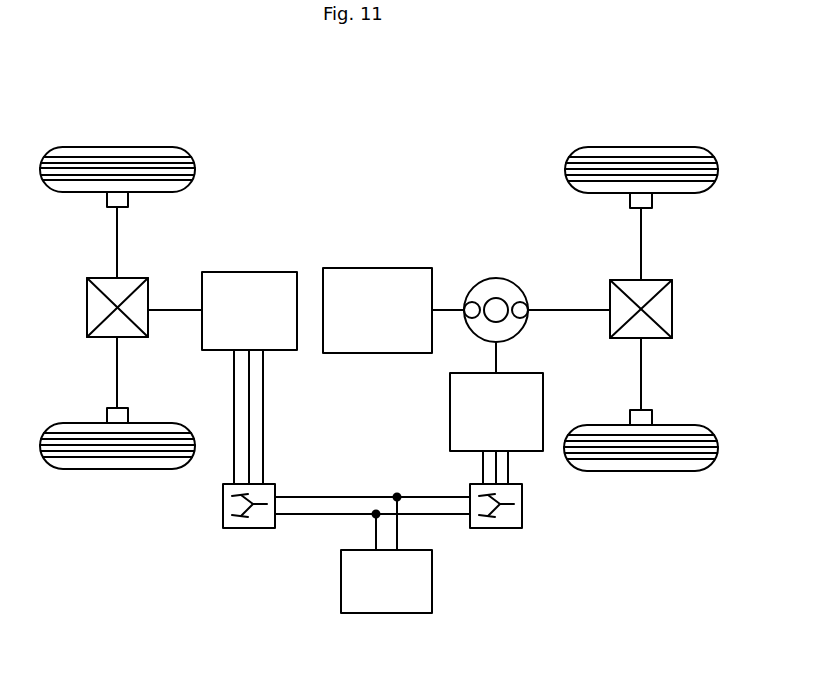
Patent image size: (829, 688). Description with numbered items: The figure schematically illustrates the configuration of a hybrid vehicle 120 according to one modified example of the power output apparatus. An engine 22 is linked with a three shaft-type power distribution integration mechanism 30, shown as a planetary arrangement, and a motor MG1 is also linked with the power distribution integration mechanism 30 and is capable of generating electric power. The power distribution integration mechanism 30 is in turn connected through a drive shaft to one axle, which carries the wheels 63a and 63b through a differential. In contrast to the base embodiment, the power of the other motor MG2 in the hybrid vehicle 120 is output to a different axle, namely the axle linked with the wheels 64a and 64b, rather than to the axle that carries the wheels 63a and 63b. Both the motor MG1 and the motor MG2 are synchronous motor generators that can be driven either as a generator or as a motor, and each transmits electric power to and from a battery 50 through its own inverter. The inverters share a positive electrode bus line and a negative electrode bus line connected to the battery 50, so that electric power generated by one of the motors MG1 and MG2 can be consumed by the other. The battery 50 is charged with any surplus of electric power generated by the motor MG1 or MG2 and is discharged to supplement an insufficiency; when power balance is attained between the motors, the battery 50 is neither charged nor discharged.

The hybrid vehicle 120 is at (404, 127).
The engine 22 is at (377, 268).
The power distribution integration mechanism 30 is at (497, 277).
The motor MG1 is at (450, 410).
The motor MG2 is at (247, 272).
The battery 50 is at (432, 582).
The wheel 63a is at (640, 147).
The wheel 63b is at (640, 471).
The wheel 64a is at (118, 147).
The wheel 64b is at (117, 469).